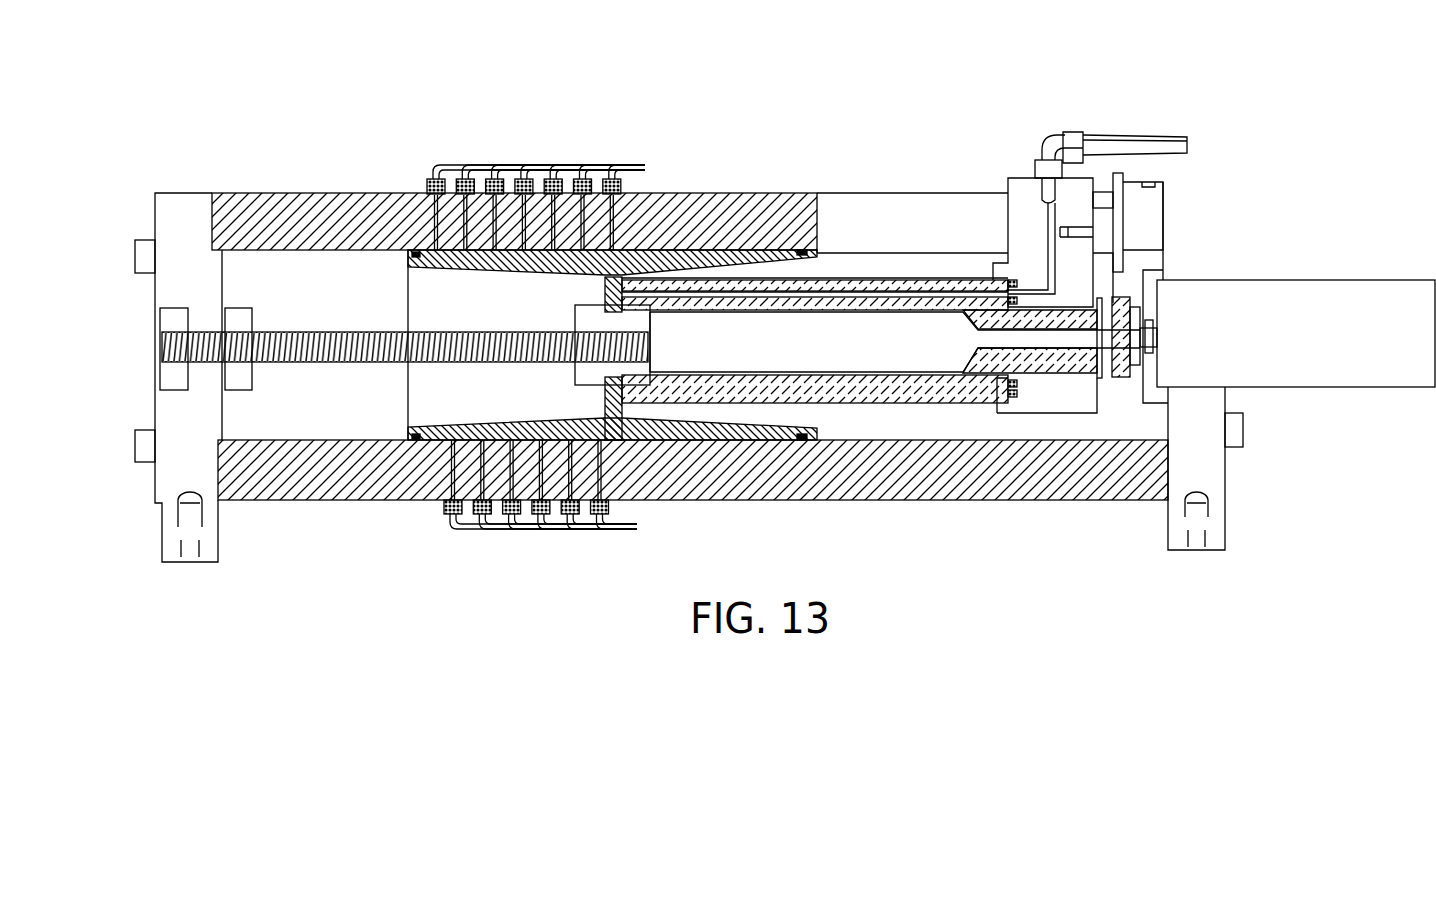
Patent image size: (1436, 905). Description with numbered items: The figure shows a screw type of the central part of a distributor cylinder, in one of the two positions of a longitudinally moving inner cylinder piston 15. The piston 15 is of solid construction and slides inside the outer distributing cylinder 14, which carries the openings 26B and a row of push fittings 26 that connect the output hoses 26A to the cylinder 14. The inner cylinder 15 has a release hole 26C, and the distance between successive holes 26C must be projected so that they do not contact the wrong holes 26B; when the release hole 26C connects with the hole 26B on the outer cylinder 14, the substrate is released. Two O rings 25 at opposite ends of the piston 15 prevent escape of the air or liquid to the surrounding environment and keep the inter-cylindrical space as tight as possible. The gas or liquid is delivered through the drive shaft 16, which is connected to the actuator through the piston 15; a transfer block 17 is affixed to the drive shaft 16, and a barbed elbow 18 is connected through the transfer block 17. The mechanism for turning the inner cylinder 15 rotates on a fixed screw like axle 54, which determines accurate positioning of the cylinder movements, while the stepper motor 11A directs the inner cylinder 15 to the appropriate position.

The stepper motor 11A is at (1295, 282).
The outer distributing cylinder 14 is at (705, 190).
The inner cylinder piston 15 is at (828, 262).
The drive shaft 16 is at (925, 402).
The transfer block 17 is at (1013, 177).
The barbed elbow 18 is at (1060, 133).
The O rings 25 is at (803, 433).
The push fittings 26 is at (422, 183).
The output hoses 26A is at (540, 168).
The openings on outer distributing cylinder 26B is at (420, 237).
The release hole 26C is at (620, 262).
The screw like axle 54 is at (337, 363).